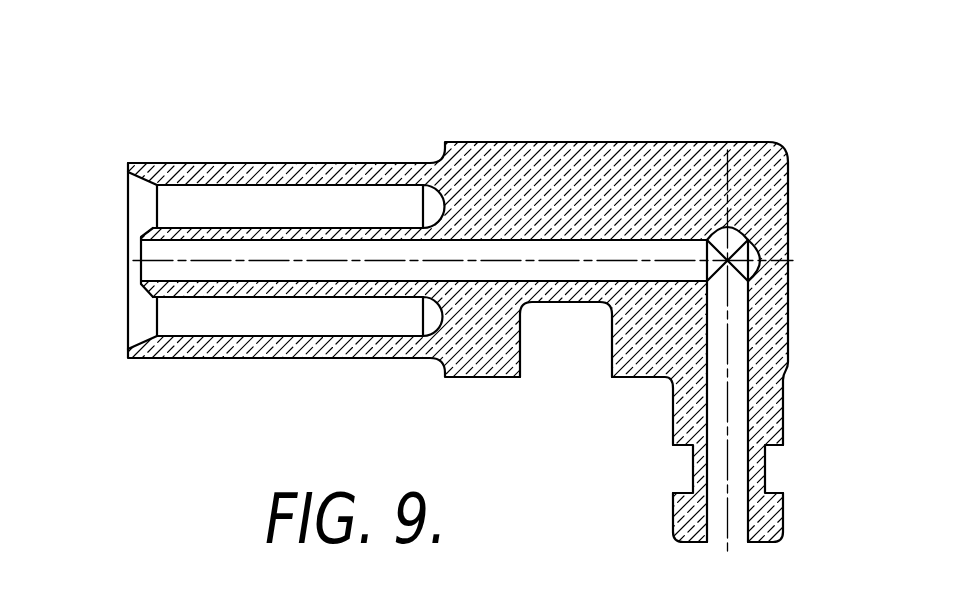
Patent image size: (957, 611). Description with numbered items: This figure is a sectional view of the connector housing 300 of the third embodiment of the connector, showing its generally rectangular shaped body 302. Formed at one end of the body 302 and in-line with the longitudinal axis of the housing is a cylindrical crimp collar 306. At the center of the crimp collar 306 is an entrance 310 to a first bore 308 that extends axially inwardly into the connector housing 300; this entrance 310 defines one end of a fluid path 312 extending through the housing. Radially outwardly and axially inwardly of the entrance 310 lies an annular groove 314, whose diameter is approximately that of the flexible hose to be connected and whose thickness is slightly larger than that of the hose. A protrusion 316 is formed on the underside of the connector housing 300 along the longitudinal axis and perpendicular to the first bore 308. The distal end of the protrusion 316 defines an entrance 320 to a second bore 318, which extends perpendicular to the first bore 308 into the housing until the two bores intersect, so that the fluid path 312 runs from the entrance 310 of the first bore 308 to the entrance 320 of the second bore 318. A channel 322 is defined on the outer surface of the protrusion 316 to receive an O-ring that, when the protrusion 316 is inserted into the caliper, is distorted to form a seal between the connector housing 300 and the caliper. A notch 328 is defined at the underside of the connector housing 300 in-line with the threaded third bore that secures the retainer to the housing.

The connector housing 300 is at (602, 102).
The body 302 is at (658, 141).
The crimp collar 306 is at (255, 162).
The first bore 308 is at (310, 250).
The entrance 310 is at (140, 271).
The fluid path 312 is at (382, 268).
The annular groove 314 is at (245, 317).
The protrusion 316 is at (787, 412).
The second bore 318 is at (740, 372).
The entrance 320 is at (740, 546).
The channel 322 is at (772, 468).
The notch 328 is at (560, 345).